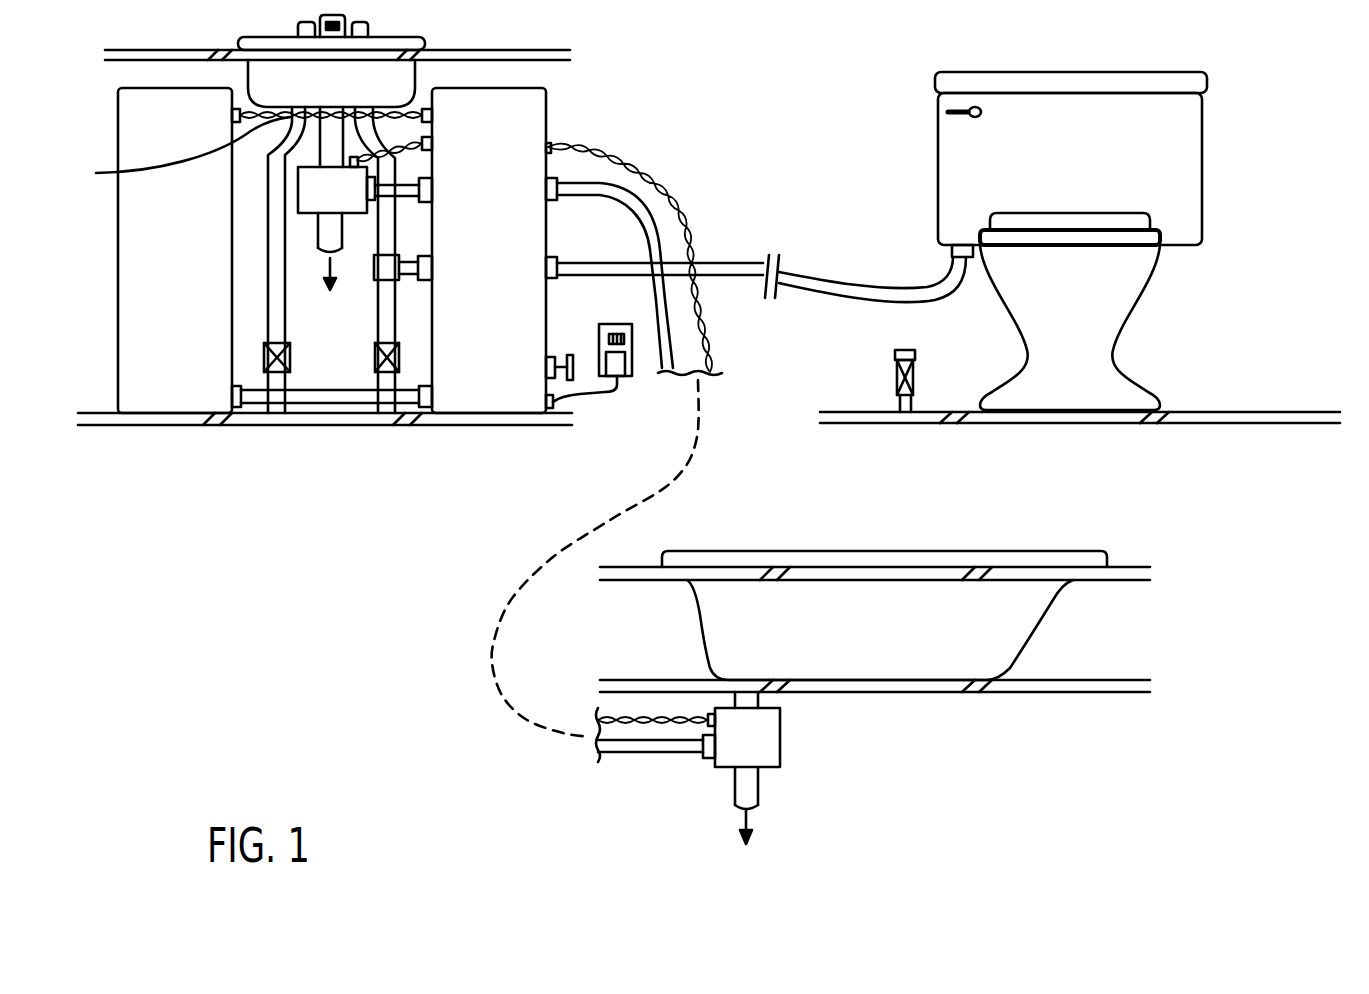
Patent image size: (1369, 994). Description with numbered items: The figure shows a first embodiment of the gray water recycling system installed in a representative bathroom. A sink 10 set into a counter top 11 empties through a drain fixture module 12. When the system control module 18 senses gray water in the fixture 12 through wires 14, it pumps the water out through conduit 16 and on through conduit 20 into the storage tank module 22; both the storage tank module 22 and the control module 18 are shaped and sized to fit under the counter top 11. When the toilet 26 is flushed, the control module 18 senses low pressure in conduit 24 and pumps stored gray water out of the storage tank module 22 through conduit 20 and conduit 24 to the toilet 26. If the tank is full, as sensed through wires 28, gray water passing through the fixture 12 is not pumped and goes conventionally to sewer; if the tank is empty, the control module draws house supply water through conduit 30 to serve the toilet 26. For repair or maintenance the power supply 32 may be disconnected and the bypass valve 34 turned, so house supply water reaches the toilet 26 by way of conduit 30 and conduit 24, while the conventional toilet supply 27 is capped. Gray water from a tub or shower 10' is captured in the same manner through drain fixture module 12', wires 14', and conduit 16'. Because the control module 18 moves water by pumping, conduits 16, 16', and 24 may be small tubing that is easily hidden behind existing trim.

The sink 10 is at (311, 55).
The counter top 11 is at (182, 55).
The drain fixture module 12 is at (330, 254).
The wires 14 is at (422, 129).
The conduit 16 is at (490, 161).
The system control module 18 is at (473, 376).
The conduit 20 is at (321, 403).
The storage tank module 22 is at (182, 376).
The conduit 24 is at (593, 268).
The toilet 26 is at (1079, 179).
The conventional toilet supply 27 is at (893, 370).
The wires 28 is at (179, 153).
The conduit 30 is at (405, 258).
The power supply 32 is at (617, 380).
The bypass valve 34 is at (570, 380).
The tub or shower 10' is at (875, 621).
The drain fixture module 12' is at (763, 787).
The wires 14' is at (623, 470).
The conduit 16' is at (655, 492).